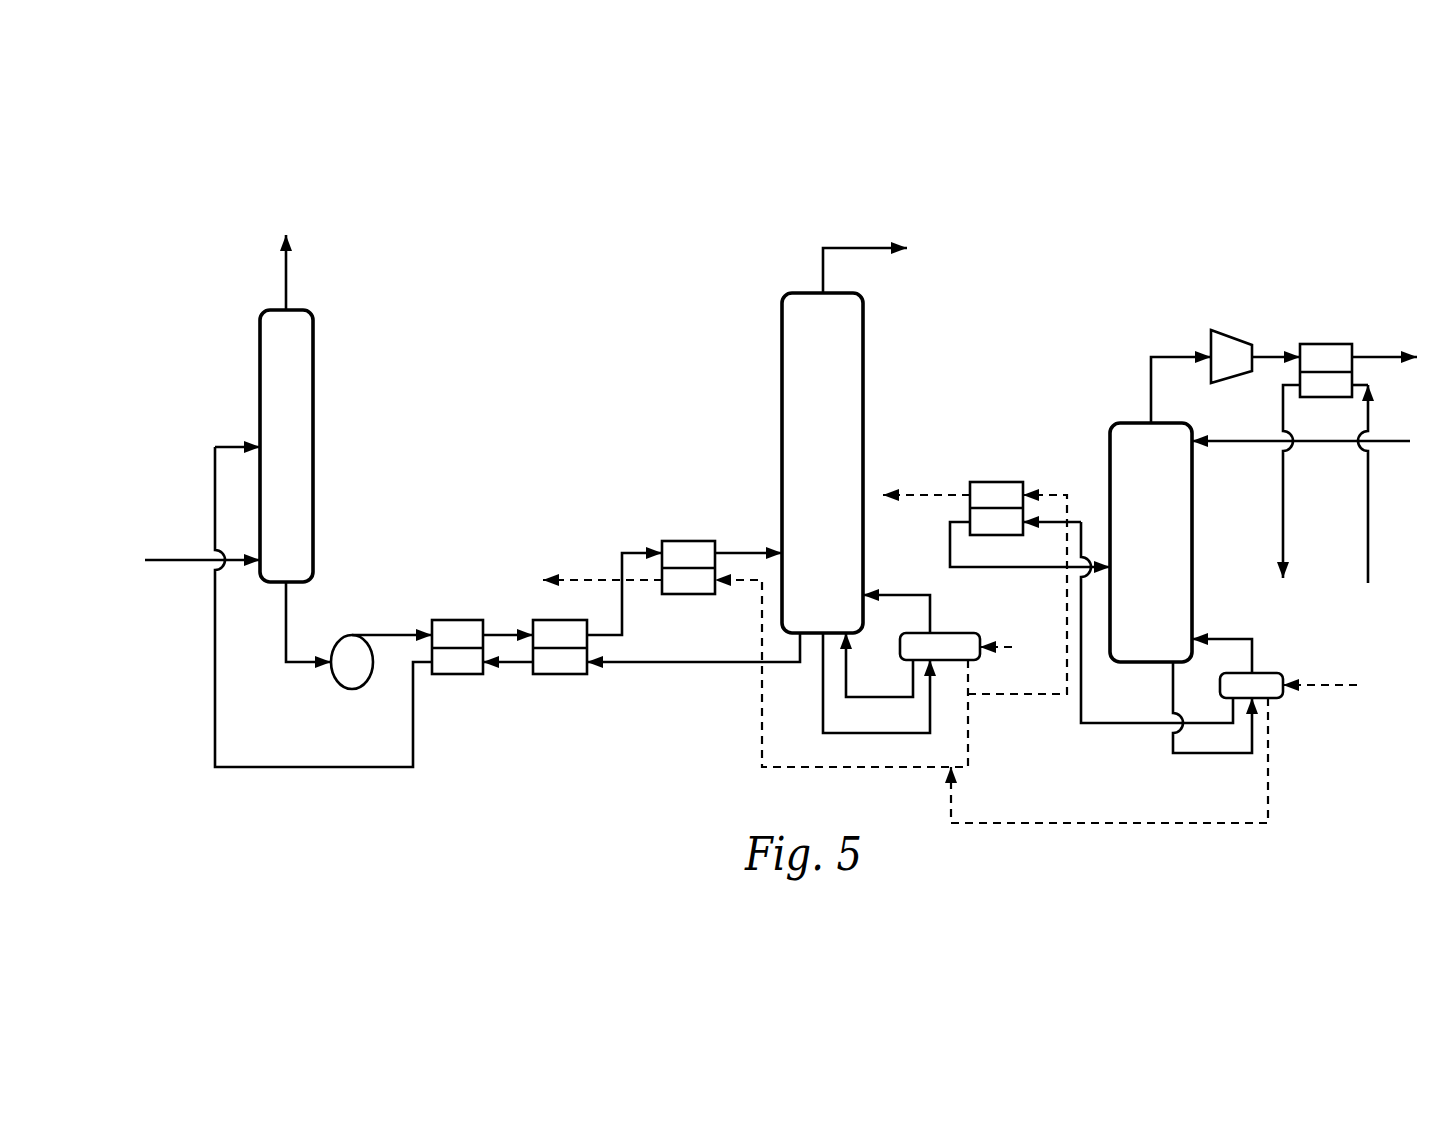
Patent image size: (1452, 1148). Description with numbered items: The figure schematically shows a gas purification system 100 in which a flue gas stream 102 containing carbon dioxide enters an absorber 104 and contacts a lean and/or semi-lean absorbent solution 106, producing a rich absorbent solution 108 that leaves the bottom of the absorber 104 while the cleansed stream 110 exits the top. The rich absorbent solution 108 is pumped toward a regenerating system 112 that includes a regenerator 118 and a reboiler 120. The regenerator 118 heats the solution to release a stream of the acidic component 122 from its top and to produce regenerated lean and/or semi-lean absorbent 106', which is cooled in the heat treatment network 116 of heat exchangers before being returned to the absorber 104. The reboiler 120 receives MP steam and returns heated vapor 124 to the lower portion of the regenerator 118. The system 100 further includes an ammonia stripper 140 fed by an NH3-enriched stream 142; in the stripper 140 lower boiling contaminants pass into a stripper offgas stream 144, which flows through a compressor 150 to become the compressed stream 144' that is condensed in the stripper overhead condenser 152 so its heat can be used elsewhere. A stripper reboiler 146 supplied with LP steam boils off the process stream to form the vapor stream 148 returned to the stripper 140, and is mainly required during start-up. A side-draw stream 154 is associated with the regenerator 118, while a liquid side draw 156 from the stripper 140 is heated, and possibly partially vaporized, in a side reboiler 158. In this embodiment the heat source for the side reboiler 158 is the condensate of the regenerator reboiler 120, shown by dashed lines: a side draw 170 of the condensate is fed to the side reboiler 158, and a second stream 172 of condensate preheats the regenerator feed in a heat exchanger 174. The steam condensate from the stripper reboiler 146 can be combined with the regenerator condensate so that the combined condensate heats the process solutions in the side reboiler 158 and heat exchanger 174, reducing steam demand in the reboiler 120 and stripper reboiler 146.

The gas purification system 100 is at (495, 198).
The flue gas stream 102 is at (180, 558).
The absorber 104 is at (298, 430).
The lean and/or semi-lean absorbent solution 106 is at (323, 629).
The regenerated lean and/or semi-lean absorbent 106' is at (693, 670).
The rich absorbent solution 108 is at (385, 633).
The cleansed stream 110 is at (287, 282).
The regenerating system 112 is at (1013, 250).
The heat treatment network 116 is at (497, 697).
The regenerator 118 is at (782, 418).
The reboiler 120 is at (948, 633).
The stream of the acidic component 122 is at (865, 248).
The heated vapor 124 is at (898, 595).
The ammonia stripper 140 is at (1160, 545).
The NH3-enriched stream 142 is at (1223, 441).
The stripper offgas stream 144 is at (1159, 364).
The compressed stripper offgas stream 144' is at (1283, 325).
The stripper reboiler 146 is at (1262, 680).
The vapor stream 148 is at (1228, 639).
The compressor 150 is at (1230, 350).
The stripper overhead condenser 152 is at (1323, 350).
The side-draw stream 154 is at (920, 492).
The stripper side draw 156 is at (1140, 723).
The side reboiler 158 is at (992, 495).
The condensate side draw 170 is at (1005, 694).
The second condensate stream 172 is at (830, 767).
The heat exchanger 174 is at (684, 548).